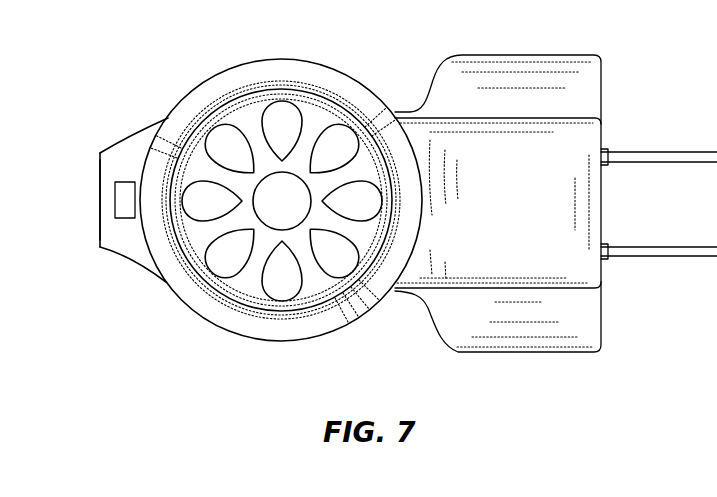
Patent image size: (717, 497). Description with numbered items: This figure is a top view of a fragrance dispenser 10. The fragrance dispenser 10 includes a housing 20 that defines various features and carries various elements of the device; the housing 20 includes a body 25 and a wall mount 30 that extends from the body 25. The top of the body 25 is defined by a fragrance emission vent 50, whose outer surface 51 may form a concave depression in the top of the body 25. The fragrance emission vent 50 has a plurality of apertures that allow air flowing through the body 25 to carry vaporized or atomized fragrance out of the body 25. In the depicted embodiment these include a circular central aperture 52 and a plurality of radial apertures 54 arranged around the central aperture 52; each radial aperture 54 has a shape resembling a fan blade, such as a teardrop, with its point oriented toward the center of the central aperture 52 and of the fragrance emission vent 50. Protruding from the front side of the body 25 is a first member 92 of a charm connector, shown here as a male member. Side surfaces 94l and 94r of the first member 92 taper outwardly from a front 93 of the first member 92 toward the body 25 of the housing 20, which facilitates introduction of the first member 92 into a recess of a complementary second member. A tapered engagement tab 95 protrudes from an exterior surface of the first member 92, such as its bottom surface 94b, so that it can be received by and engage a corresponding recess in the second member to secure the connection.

The fragrance dispenser 10 is at (158, 50).
The housing 20 is at (393, 372).
The body 25 is at (357, 320).
The wall mount 30 is at (518, 328).
The fragrance emission vent 50 is at (351, 87).
The outer surface 51 is at (253, 118).
The central aperture 52 is at (267, 183).
The radial aperture 54 is at (278, 276).
The first member 92 is at (132, 112).
The front 93 is at (100, 222).
The side surface 94l is at (125, 140).
The bottom surface 94b is at (115, 163).
The side surface 94r is at (146, 272).
The tapered engagement tab 95 is at (128, 200).